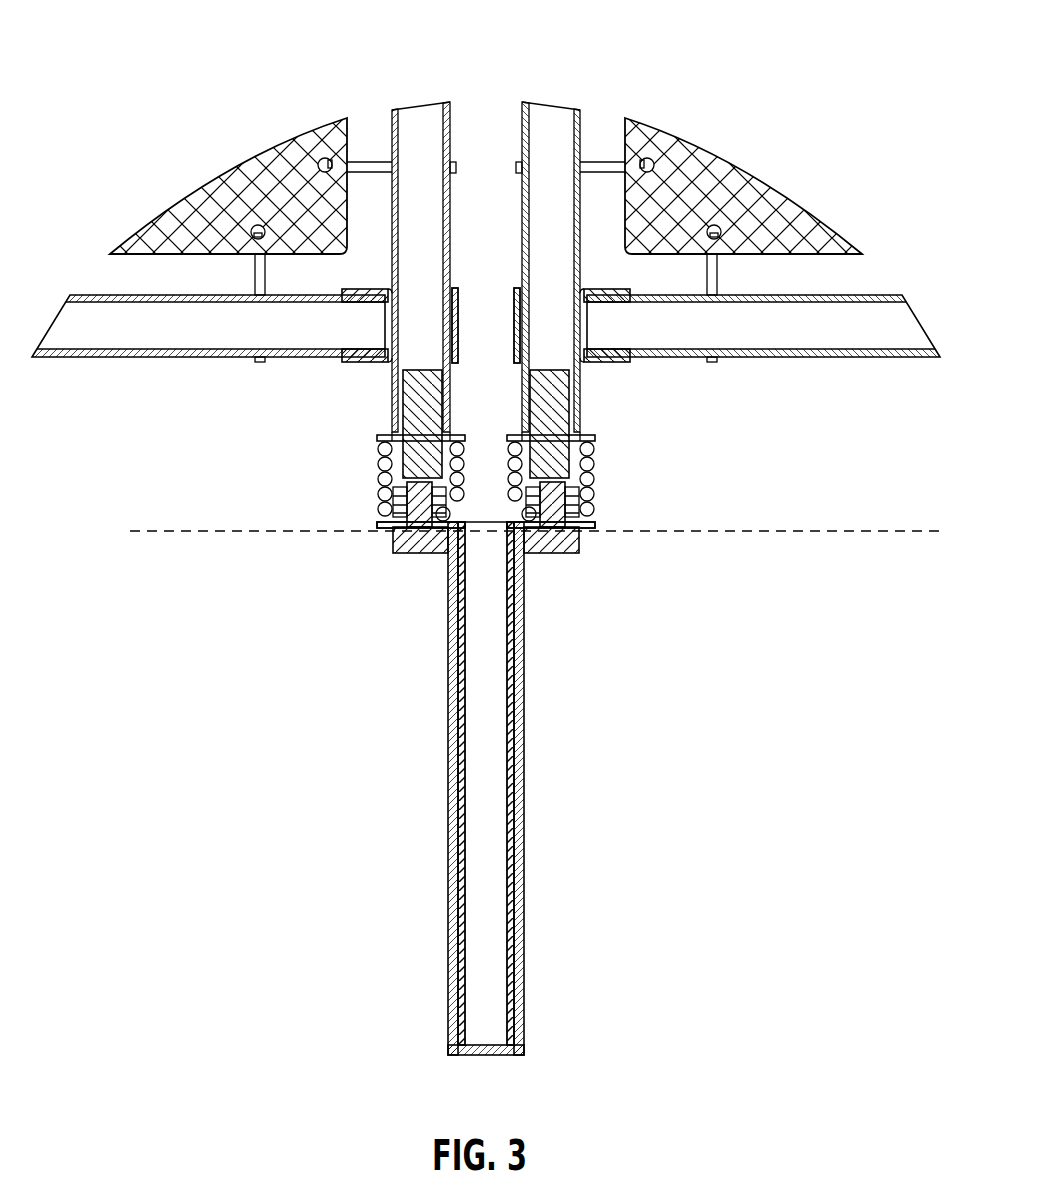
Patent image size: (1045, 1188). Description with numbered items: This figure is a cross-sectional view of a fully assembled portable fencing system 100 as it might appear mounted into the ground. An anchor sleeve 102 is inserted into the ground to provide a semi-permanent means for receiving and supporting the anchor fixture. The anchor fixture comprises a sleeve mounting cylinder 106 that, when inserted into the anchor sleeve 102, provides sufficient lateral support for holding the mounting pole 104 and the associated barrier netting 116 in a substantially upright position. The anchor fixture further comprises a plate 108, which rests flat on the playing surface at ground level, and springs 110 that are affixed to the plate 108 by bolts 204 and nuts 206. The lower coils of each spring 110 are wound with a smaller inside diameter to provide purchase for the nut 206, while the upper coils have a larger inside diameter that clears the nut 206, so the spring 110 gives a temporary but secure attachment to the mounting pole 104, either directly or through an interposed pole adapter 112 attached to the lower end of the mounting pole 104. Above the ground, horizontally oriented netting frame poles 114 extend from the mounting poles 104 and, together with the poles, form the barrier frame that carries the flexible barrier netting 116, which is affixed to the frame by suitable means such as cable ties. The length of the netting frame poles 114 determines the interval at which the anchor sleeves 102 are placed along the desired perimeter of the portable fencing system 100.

The portable fencing system 100 is at (486, 533).
The anchor sleeve 102 is at (448, 903).
The mounting pole 104 is at (533, 252).
The sleeve mounting cylinder 106 is at (474, 752).
The plate 108 is at (380, 538).
The spring 110 is at (378, 465).
The pole adapter 112 is at (410, 403).
The netting frame pole 114 is at (180, 358).
The barrier netting 116 is at (727, 175).
The bolt 204 is at (418, 555).
The nut 206 is at (380, 500).